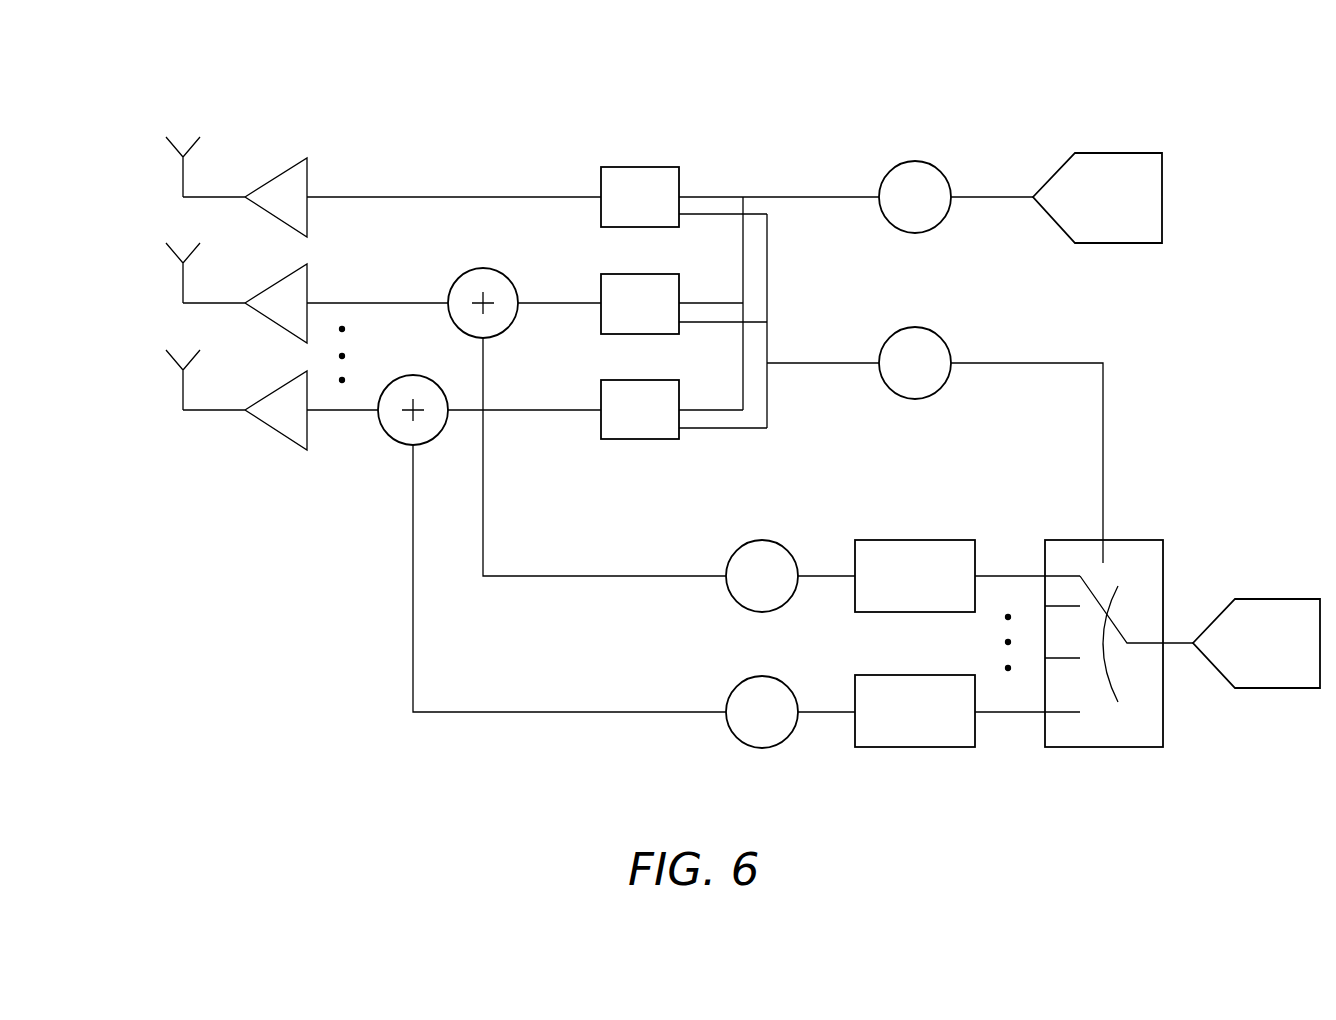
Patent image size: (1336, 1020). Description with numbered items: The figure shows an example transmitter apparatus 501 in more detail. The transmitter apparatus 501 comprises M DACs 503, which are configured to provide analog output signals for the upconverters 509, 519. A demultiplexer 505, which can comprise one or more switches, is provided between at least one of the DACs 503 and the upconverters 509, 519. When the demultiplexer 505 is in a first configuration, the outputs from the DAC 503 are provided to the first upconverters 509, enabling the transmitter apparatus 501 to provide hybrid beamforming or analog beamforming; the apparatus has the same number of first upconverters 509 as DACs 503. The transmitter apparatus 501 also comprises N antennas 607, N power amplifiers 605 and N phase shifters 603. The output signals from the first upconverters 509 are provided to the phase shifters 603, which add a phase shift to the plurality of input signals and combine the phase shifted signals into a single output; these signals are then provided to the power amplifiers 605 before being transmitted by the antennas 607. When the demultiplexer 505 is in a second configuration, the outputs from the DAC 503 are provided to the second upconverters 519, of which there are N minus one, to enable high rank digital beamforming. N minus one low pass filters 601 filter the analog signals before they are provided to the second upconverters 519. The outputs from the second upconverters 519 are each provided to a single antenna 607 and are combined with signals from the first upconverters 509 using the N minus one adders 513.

The transmitter apparatus 501 is at (201, 89).
The antennas 607 is at (170, 356).
The power amplifiers 605 is at (283, 384).
The adders 513 is at (411, 375).
The phase shifters 603 is at (640, 476).
The first upconverters 509 is at (915, 327).
The DACs 503 is at (1280, 598).
The second upconverters 519 is at (762, 782).
The low pass filters 601 is at (925, 782).
The demultiplexer 505 is at (1125, 748).